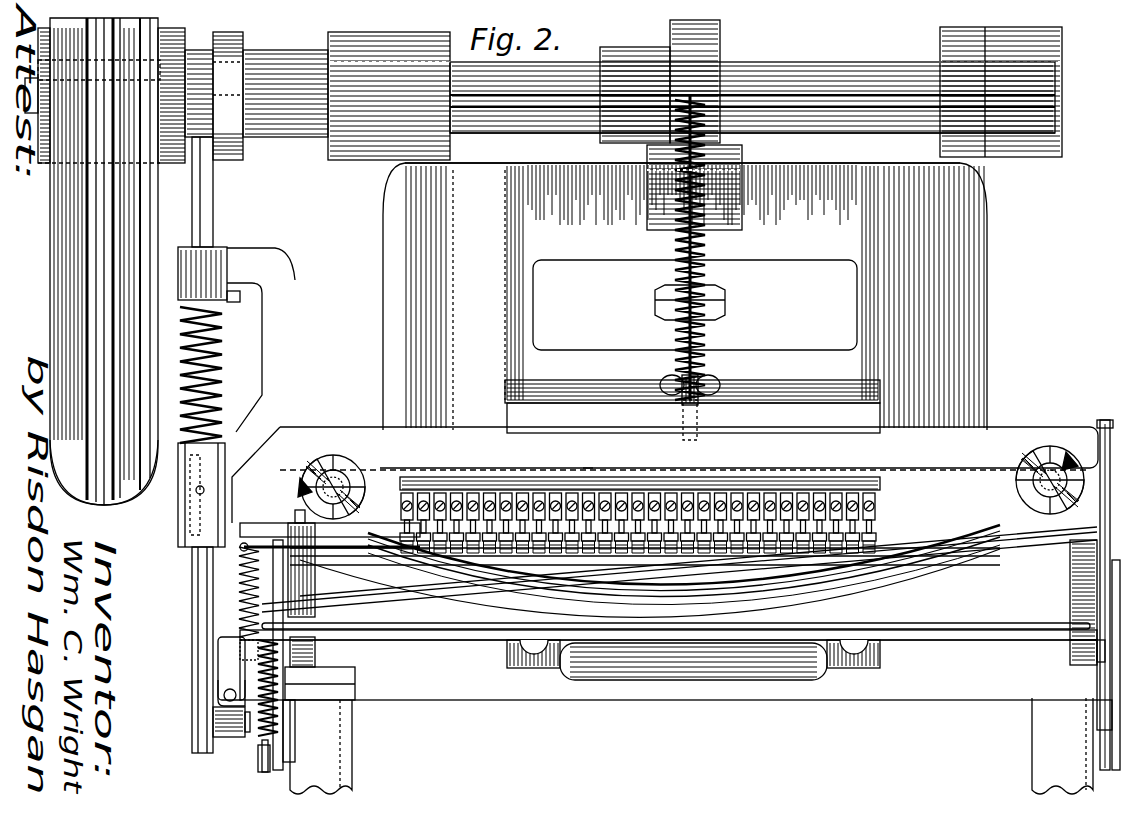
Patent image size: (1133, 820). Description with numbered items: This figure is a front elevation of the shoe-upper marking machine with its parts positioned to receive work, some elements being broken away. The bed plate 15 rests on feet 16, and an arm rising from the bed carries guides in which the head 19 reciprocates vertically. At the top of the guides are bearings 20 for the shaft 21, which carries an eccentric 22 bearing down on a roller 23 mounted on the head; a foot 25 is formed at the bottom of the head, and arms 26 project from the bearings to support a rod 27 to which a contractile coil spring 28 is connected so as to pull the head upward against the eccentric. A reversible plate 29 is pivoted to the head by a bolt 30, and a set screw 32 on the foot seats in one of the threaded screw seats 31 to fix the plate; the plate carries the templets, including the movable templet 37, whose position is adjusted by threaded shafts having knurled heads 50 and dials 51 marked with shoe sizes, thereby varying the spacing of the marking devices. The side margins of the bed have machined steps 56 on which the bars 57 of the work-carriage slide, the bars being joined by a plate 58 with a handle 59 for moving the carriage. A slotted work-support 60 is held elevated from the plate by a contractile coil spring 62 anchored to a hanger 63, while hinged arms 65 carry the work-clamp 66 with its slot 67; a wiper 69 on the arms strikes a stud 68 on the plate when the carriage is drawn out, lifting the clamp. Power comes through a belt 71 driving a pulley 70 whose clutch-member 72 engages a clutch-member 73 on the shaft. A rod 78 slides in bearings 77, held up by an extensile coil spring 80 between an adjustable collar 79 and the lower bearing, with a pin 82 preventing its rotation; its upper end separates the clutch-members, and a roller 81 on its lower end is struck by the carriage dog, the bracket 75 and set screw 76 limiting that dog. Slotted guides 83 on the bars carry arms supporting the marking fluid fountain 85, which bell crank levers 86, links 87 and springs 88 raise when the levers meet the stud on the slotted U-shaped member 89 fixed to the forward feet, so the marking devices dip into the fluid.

The bed plate 15 is at (463, 688).
The feet 16 is at (691, 746).
The head 19 is at (772, 255).
The bearing 20 is at (333, 147).
The shaft 21 is at (497, 99).
The eccentric 22 is at (660, 210).
The roller 23 is at (742, 160).
The base or foot 25 is at (620, 408).
The arms 26 is at (330, 147).
The rod 27 is at (505, 107).
The contractile coil spring 28 is at (680, 270).
The reversible plate 29 is at (665, 475).
The bolt 30 is at (722, 333).
The screw seat 31 is at (700, 443).
The set screw 32 is at (722, 385).
The movable templet 37 is at (587, 468).
The knurled head 50 is at (330, 488).
The dial 51 is at (302, 485).
The machined steps 56 is at (316, 657).
The bars 57 is at (302, 663).
The plate 58 is at (447, 640).
The handle 59 is at (693, 660).
The work-support 60 is at (958, 577).
The contractile coil spring 62 is at (262, 728).
The hanger 63 is at (262, 760).
The arm 65 is at (316, 592).
The work-clamp 66 is at (460, 585).
The slot 67 is at (525, 575).
The stud 68 is at (1112, 420).
The wiper 69 is at (1062, 550).
The pulley 70 is at (68, 462).
The belt 71 is at (105, 345).
The clutch-member 72 is at (40, 163).
The clutch-member 73 is at (235, 48).
The bracket 75 is at (226, 690).
The set screw 76 is at (225, 700).
The bearings 77 is at (200, 560).
The rod 78 is at (206, 214).
The adjustable collar 79 is at (240, 300).
The extensile coil spring 80 is at (226, 346).
The roller 81 is at (230, 733).
The pin 82 is at (198, 494).
The vertically slotted guides 83 is at (280, 590).
The marking fluid fountain 85 is at (712, 560).
The bell crank levers 86 is at (265, 765).
The links 87 is at (275, 573).
The springs 88 is at (245, 665).
The slotted U-shaped member 89 is at (288, 753).